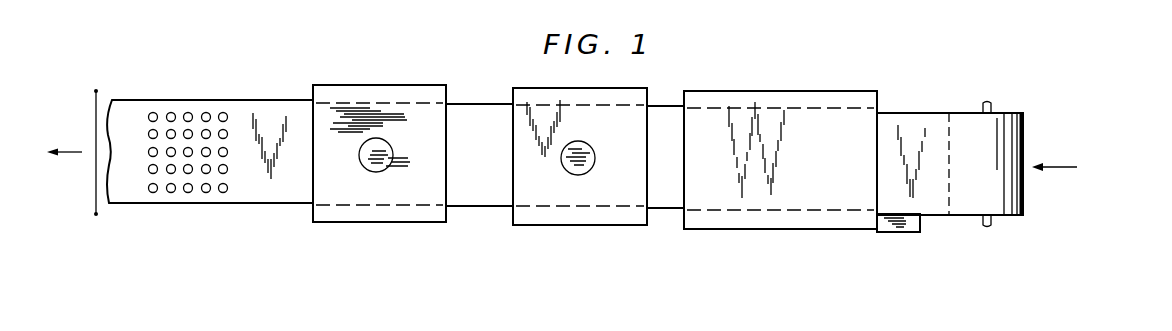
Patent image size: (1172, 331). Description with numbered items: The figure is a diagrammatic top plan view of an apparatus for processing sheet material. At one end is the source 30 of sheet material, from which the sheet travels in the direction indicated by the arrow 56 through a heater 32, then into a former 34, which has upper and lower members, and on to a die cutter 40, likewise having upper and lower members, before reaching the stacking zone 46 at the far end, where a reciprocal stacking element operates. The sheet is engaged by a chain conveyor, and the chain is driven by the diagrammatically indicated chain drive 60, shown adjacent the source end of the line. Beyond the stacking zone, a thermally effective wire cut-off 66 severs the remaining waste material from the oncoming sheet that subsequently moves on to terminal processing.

The source of sheet material 30 is at (1030, 194).
The heater 32 is at (715, 234).
The former 34 is at (525, 229).
The die cutter 40 is at (325, 226).
The stacking zone 46 is at (140, 211).
The arrow 56 is at (1058, 166).
The chain drive 60 is at (885, 237).
The thermally effective wire cut-off 66 is at (93, 106).